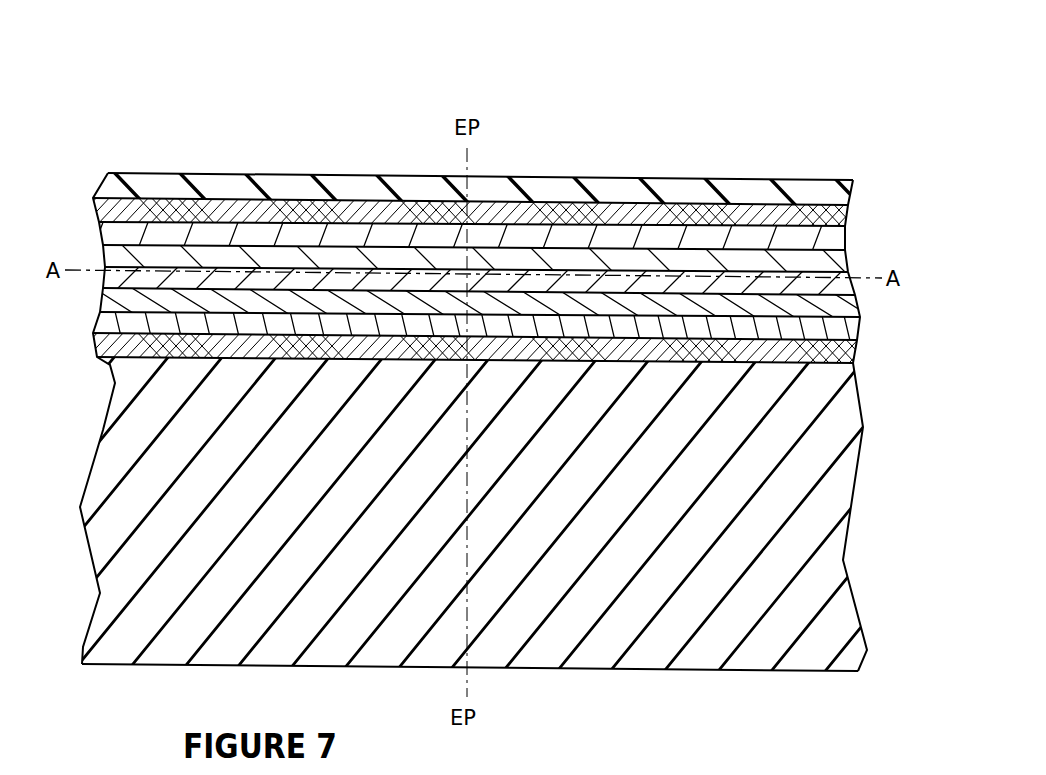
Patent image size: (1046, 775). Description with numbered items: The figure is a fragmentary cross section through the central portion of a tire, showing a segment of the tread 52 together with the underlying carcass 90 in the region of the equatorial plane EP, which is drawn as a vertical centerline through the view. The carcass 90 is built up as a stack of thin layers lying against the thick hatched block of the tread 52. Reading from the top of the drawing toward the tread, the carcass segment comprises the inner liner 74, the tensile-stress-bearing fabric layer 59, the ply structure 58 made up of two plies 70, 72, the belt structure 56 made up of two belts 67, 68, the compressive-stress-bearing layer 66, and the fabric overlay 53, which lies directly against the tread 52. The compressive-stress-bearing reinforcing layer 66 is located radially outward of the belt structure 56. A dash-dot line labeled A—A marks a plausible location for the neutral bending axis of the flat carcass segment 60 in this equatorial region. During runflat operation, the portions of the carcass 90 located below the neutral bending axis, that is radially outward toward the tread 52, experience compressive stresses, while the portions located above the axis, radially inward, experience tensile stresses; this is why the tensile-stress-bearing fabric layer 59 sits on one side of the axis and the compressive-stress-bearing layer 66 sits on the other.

The carcass 90 is at (699, 80).
The flat carcass segment 60 is at (884, 262).
The inner liner 74 is at (285, 182).
The tensile-stress-bearing fabric layer 59 is at (657, 217).
The ply structure 58 is at (103, 243).
The ply 70 is at (838, 237).
The ply 72 is at (838, 263).
The belt 67 is at (113, 277).
The belt 68 is at (120, 300).
The compressive-stress-bearing layer 66 is at (105, 318).
The belt structure 56 is at (830, 295).
The fabric overlay 53 is at (827, 360).
The tread 52 is at (798, 672).